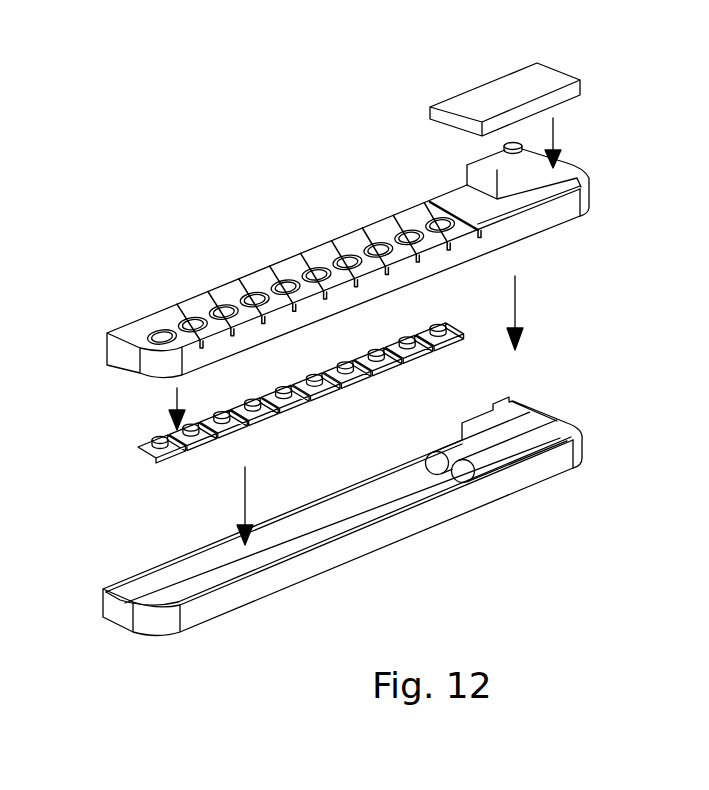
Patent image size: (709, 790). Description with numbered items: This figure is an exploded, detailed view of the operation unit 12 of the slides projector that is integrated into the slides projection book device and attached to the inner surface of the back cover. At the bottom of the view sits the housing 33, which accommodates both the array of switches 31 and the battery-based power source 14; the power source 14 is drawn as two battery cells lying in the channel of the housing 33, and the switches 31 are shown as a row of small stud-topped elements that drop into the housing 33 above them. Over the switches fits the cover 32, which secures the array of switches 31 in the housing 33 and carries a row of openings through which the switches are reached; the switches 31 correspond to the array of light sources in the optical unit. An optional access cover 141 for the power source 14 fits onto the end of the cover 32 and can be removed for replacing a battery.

The operation unit 12 is at (261, 146).
The access cover 141 is at (573, 74).
The cover 32 is at (530, 225).
The array of switches 31 is at (139, 449).
The power source 14 is at (537, 447).
The housing 33 is at (403, 535).